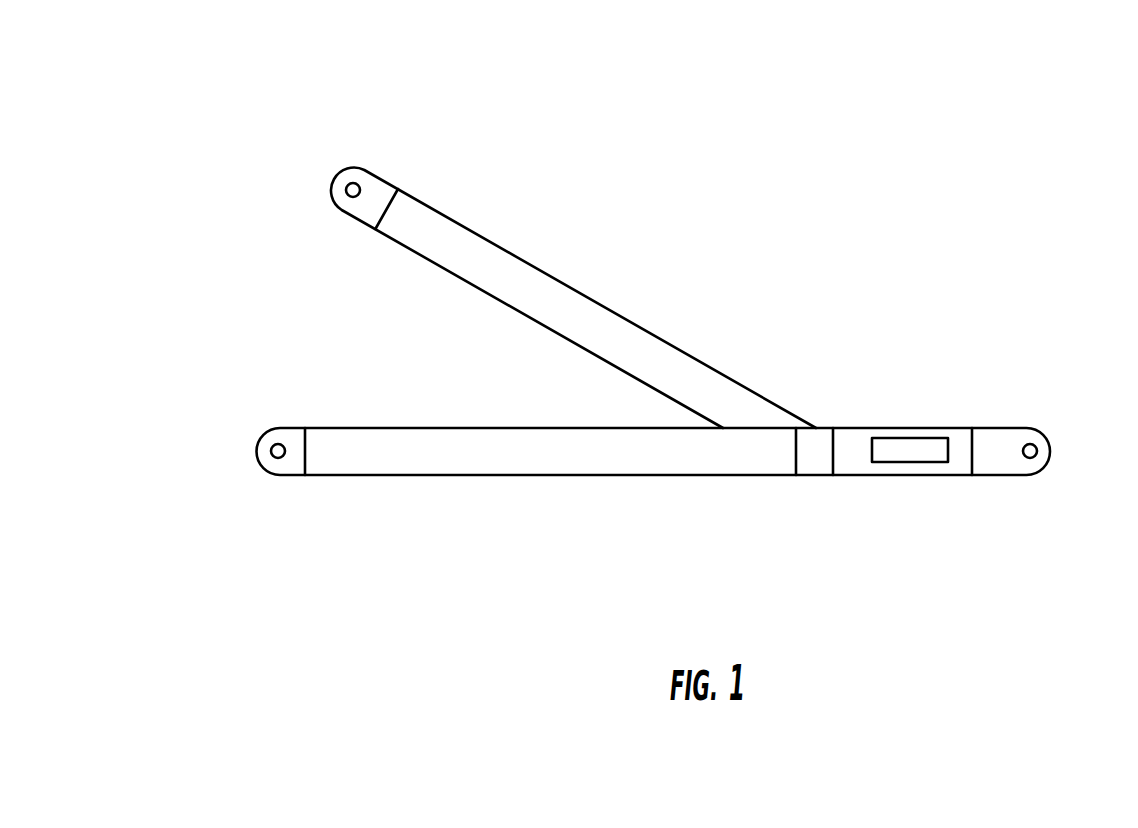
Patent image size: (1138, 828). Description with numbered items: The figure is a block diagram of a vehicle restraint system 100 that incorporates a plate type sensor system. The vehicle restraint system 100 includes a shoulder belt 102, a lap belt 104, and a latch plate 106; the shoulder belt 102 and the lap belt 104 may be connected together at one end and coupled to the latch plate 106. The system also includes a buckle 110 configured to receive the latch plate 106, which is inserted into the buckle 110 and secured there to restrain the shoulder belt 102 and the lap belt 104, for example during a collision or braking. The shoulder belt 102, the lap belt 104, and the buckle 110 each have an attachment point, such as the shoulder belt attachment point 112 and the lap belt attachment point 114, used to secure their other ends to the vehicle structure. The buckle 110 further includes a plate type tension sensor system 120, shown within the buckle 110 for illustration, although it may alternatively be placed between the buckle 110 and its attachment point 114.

The vehicle restraint system 100 is at (432, 67).
The shoulder belt 102 is at (620, 320).
The lap belt 104 is at (393, 438).
The latch plate 106 is at (818, 438).
The buckle 110 is at (853, 473).
The shoulder belt attachment point 112 is at (363, 210).
The lap belt attachment point 114 is at (292, 468).
The plate type tension sensor system 120 is at (933, 457).